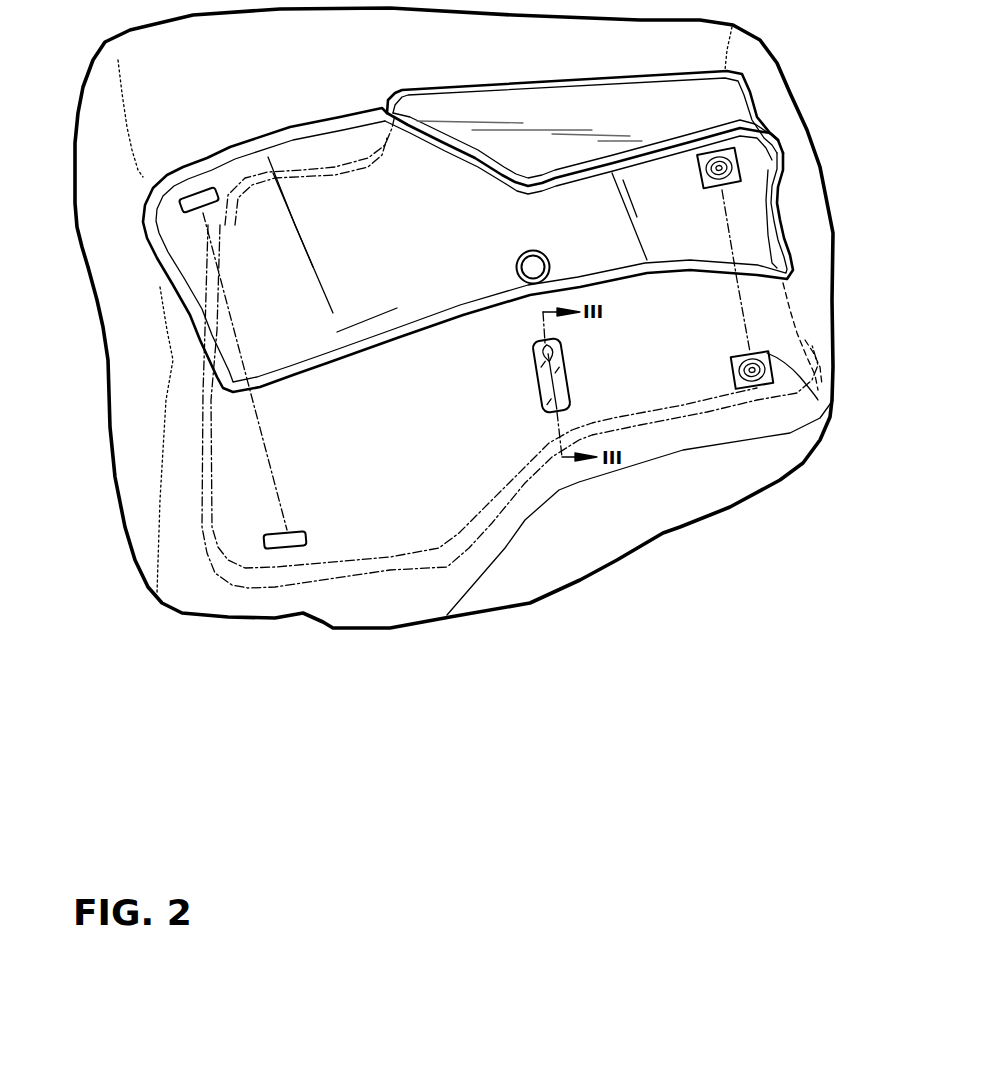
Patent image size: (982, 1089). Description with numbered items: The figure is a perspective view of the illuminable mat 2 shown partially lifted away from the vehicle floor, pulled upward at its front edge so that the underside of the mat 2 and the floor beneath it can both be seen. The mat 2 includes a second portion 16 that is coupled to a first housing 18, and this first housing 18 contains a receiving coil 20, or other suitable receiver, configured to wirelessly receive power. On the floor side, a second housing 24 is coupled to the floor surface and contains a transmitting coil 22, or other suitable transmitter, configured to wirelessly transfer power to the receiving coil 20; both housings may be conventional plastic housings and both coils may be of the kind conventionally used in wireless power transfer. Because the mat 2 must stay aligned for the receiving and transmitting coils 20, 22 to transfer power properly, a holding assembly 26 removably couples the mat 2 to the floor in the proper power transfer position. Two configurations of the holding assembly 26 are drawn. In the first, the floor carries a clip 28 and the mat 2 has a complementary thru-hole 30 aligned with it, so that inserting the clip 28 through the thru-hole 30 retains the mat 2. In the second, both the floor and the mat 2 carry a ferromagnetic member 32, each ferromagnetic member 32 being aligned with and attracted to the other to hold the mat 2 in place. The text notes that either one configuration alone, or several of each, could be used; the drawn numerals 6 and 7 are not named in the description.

The mat 2 is at (654, 114).
The door panel 6 is at (571, 56).
The flange channel 7 is at (818, 280).
The second portion 16 is at (409, 250).
The first housing 18 is at (743, 177).
The receiving coil 20 is at (740, 160).
The transmitting coil 22 is at (752, 373).
The second housing 24 is at (813, 398).
The holding assembly 26 is at (500, 283).
The clip 28 is at (567, 377).
The thru-hole 30 is at (517, 262).
The ferromagnetic member 32 is at (187, 653).